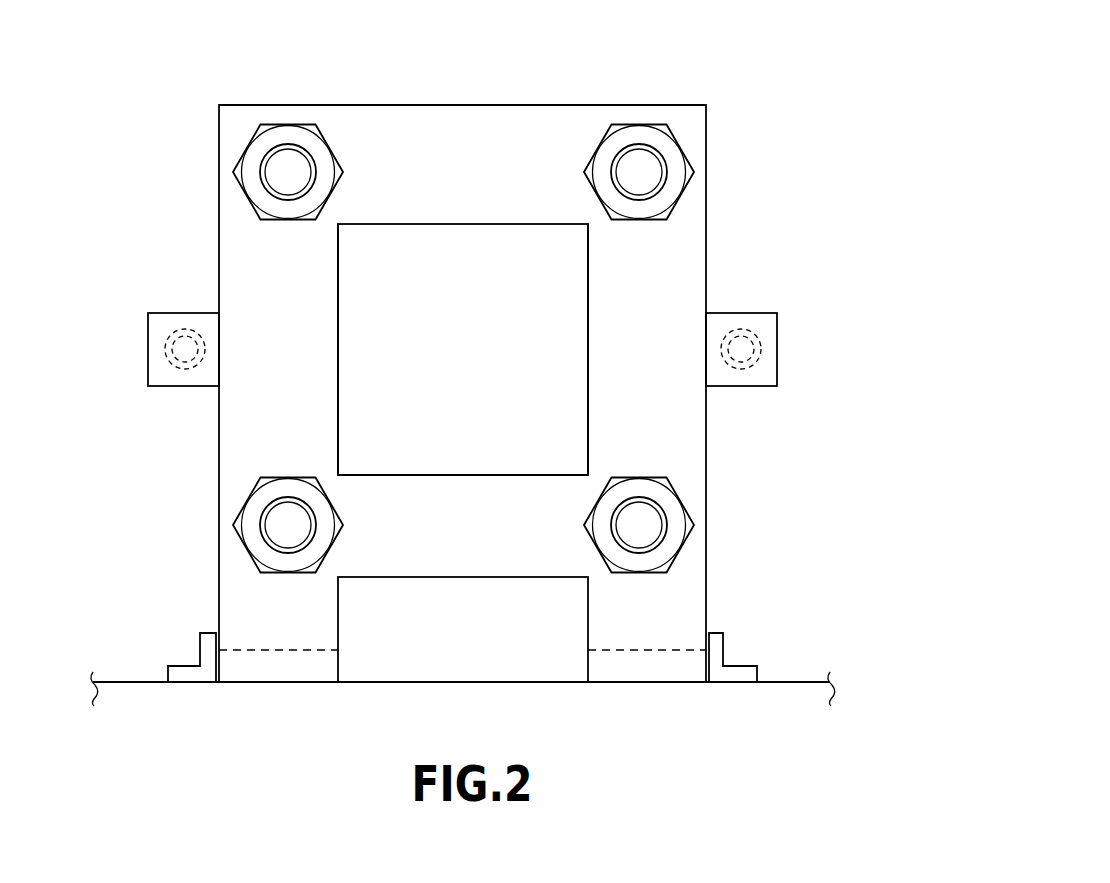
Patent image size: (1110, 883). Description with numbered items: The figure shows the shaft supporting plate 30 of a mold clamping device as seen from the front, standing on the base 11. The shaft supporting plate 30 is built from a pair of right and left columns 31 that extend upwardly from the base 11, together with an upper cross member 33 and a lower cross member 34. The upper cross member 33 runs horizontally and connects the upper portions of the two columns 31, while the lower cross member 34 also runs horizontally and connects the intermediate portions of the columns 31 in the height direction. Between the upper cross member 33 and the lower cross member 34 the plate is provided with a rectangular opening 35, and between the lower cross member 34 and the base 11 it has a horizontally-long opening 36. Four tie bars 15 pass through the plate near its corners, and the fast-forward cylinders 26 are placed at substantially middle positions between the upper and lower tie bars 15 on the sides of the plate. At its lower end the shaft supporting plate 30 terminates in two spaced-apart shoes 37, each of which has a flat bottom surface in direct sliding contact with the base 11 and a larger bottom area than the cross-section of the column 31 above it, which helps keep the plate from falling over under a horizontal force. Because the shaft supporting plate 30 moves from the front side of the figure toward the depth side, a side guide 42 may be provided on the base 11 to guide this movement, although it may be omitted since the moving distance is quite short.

The base 11 is at (800, 682).
The tie bars 15 is at (287, 172).
The fast-forward mechanisms 26 is at (165, 356).
The shaft supporting plate 30 is at (710, 102).
The columns 31 is at (283, 347).
The upper cross member 33 is at (451, 145).
The lower cross member 34 is at (465, 517).
The rectangular opening 35 is at (455, 224).
The horizontally-long opening 36 is at (467, 577).
The shoes 37 is at (277, 665).
The side guide 42 is at (197, 655).